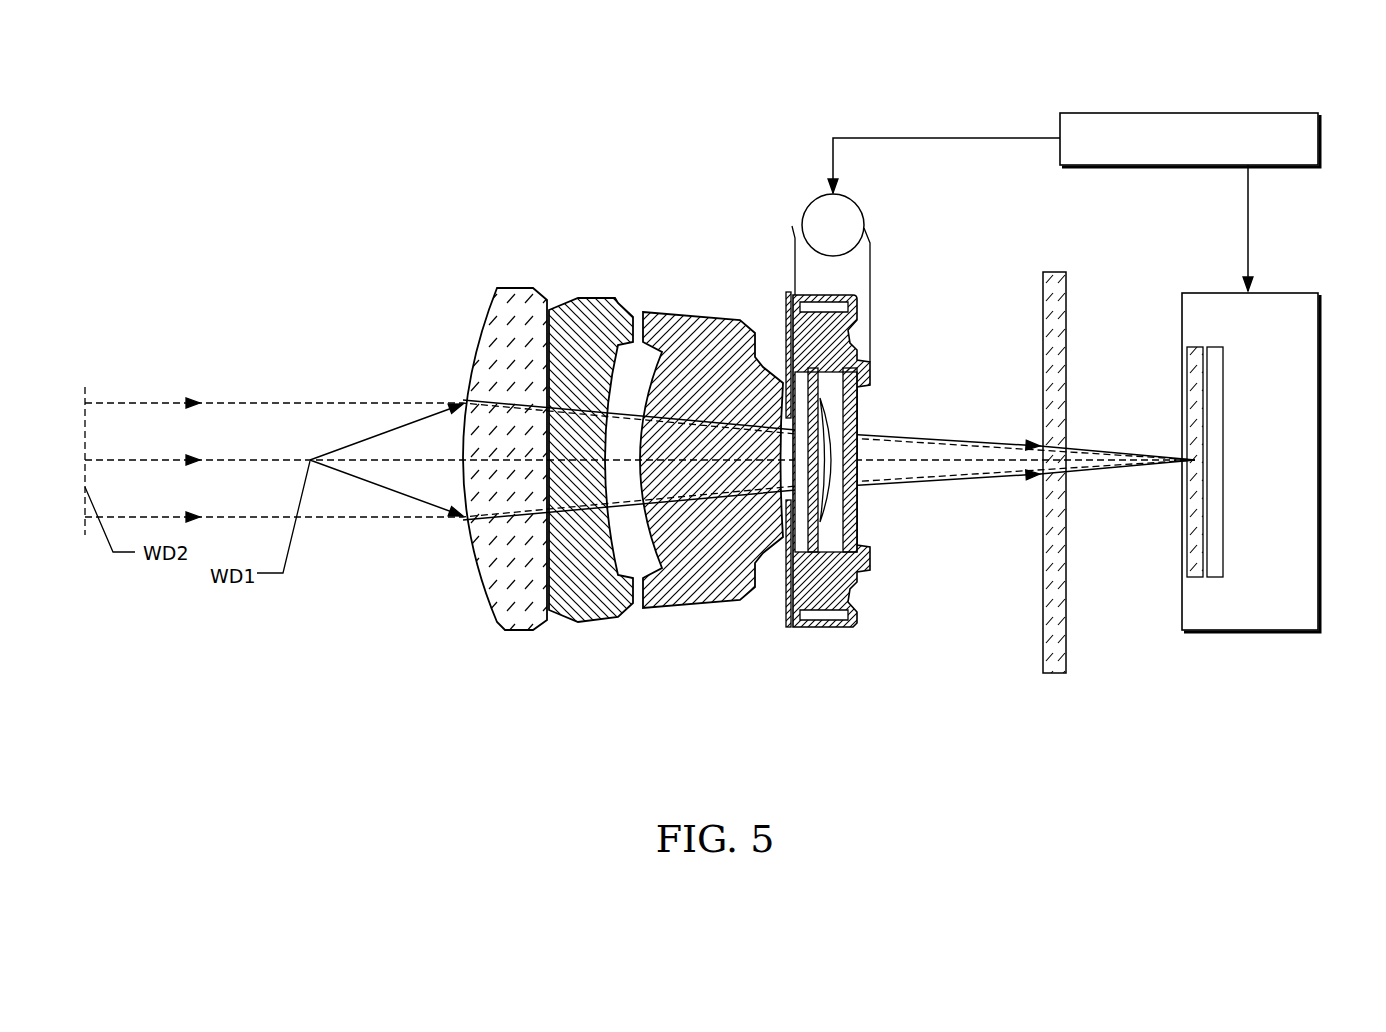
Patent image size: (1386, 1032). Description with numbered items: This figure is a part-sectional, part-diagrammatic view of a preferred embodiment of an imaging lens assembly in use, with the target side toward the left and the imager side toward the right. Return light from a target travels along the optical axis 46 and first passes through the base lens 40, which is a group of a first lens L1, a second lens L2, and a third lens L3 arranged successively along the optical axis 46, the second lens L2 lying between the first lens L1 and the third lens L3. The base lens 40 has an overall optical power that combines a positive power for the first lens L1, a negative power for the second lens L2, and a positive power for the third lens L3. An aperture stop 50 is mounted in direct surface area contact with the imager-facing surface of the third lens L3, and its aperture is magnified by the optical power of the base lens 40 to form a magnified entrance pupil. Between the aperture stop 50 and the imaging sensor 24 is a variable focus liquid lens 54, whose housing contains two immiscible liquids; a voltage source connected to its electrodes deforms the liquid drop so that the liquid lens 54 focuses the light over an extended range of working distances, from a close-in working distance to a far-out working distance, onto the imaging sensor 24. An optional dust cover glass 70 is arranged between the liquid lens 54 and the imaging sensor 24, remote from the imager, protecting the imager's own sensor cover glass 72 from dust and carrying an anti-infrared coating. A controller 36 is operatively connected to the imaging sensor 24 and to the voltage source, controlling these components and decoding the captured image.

The imaging sensor 24 is at (1226, 443).
The controller 36 is at (1192, 113).
The base lens 40 is at (586, 422).
The optical axis 46 is at (276, 458).
The aperture stop 50 is at (789, 626).
The variable focus liquid lens 54 is at (823, 628).
The dust cover glass 70 is at (1057, 673).
The sensor cover glass 72 is at (1145, 393).
The first lens L1 is at (518, 287).
The second lens L2 is at (600, 300).
The third lens L3 is at (667, 312).